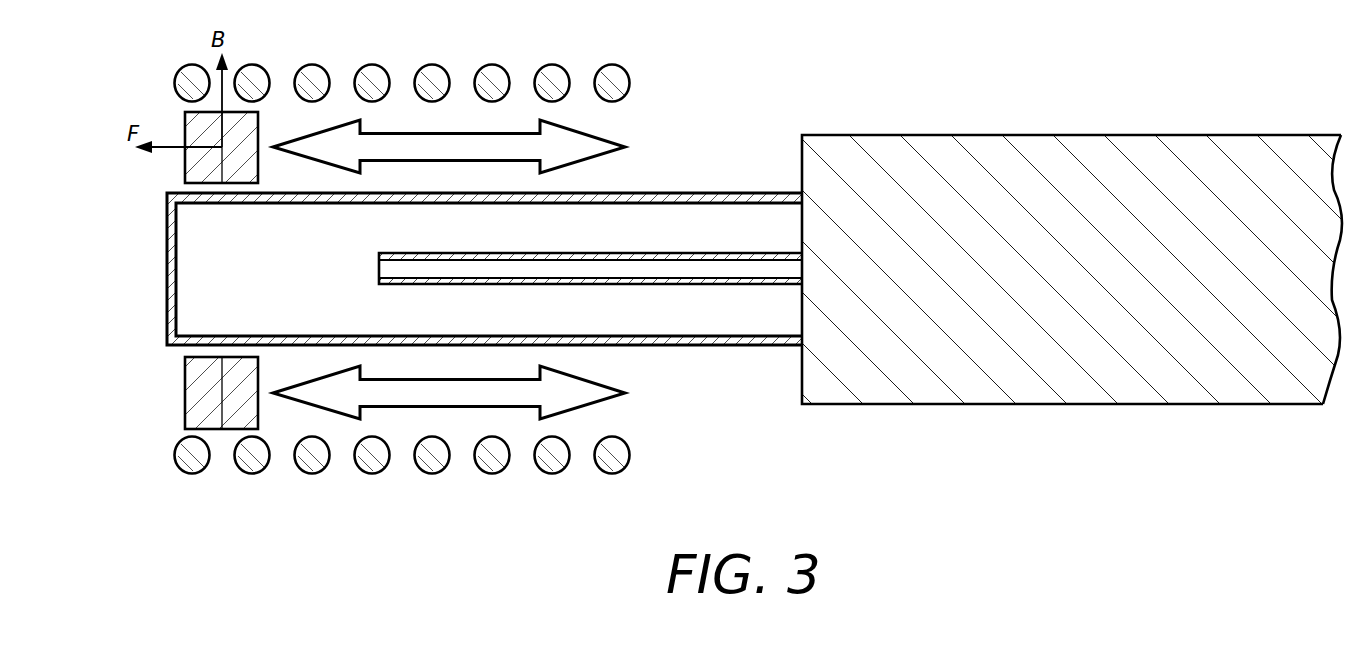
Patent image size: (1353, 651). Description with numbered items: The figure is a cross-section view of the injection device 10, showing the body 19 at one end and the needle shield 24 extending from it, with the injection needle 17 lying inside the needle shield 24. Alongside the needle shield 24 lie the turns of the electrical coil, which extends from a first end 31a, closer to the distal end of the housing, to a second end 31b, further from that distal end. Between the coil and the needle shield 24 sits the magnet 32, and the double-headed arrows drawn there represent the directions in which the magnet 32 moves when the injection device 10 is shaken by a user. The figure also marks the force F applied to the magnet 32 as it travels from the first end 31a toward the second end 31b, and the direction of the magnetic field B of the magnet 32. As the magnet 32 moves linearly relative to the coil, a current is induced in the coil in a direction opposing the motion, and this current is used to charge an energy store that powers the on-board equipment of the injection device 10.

The injection device 10 is at (849, 82).
The injection needle 17 is at (732, 257).
The body 19 is at (866, 388).
The needle shield 24 is at (733, 347).
The first end of the electrical coil 31a is at (612, 465).
The second end of the electrical coil 31b is at (192, 468).
The magnet 32 is at (190, 170).